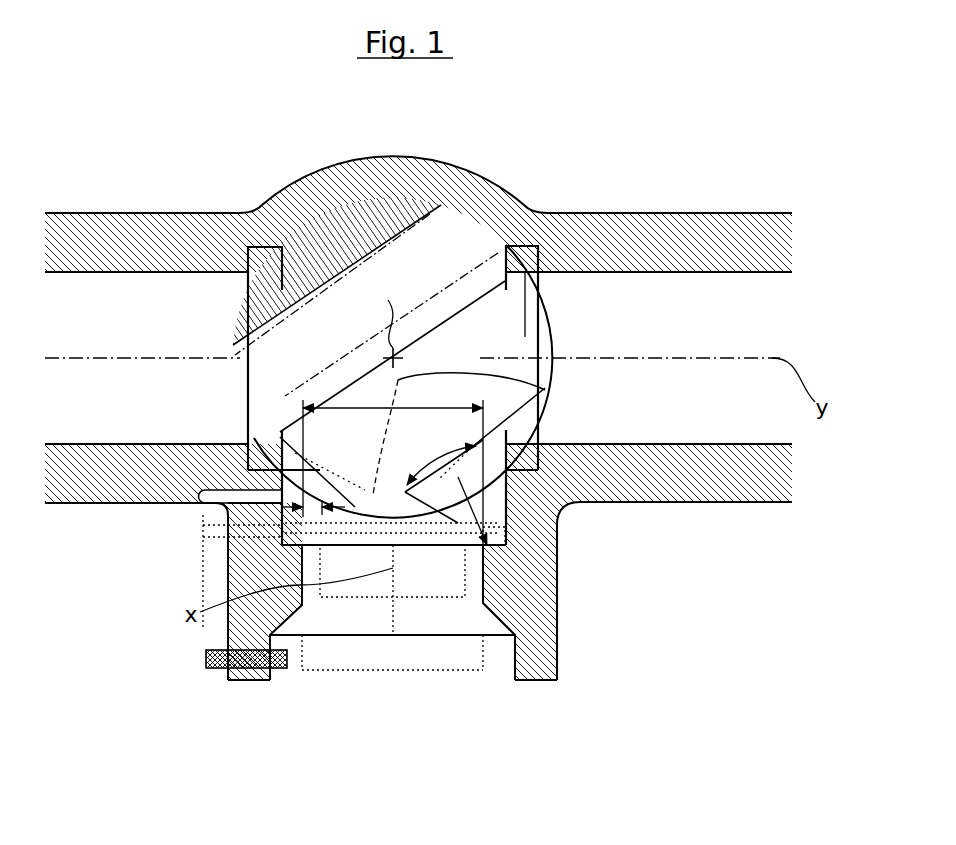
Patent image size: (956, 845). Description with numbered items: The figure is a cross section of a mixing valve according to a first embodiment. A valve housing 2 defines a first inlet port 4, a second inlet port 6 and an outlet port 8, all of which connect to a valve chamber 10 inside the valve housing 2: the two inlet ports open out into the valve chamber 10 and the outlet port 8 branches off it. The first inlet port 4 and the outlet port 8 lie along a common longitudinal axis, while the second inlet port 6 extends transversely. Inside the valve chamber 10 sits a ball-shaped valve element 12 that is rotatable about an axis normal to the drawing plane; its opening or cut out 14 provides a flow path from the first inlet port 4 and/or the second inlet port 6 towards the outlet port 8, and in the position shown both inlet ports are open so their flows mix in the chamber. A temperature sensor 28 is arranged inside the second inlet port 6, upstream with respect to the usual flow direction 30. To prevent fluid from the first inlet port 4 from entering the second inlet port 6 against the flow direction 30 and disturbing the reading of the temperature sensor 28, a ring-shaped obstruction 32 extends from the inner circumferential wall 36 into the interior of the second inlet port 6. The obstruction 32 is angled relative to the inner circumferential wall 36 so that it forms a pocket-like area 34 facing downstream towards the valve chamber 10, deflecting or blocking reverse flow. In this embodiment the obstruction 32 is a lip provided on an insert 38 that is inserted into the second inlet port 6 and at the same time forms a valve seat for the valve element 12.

The valve housing 2 is at (535, 151).
The first inlet port 4 is at (78, 421).
The second inlet port 6 is at (440, 688).
The outlet port 8 is at (719, 421).
The valve chamber 10 is at (457, 203).
The valve element 12 is at (312, 247).
The opening or cut out 14 is at (485, 272).
The temperature sensor 28 is at (212, 667).
The flow direction 30 is at (393, 645).
The obstruction 32 is at (312, 544).
The pocket-like area 34 is at (490, 527).
The inner circumferential wall 36 is at (293, 514).
The insert 38 is at (497, 492).